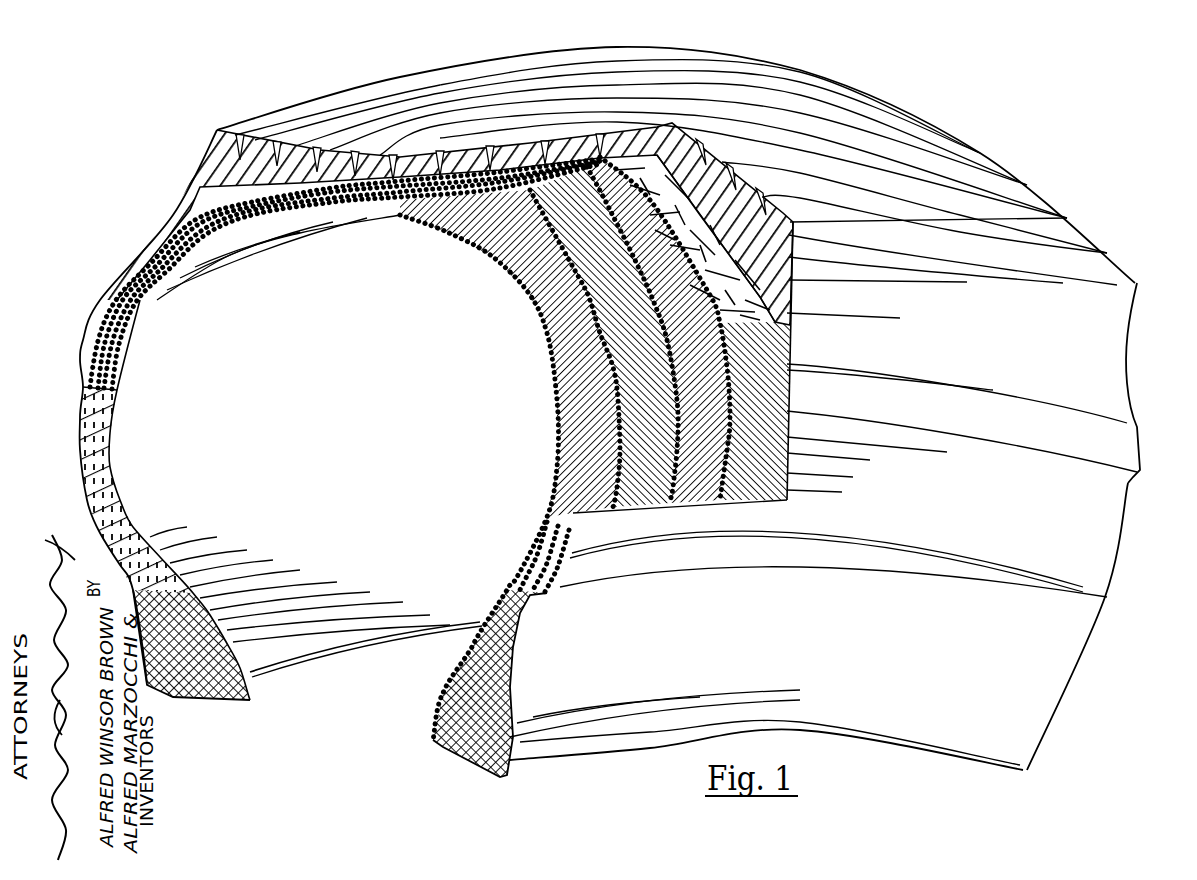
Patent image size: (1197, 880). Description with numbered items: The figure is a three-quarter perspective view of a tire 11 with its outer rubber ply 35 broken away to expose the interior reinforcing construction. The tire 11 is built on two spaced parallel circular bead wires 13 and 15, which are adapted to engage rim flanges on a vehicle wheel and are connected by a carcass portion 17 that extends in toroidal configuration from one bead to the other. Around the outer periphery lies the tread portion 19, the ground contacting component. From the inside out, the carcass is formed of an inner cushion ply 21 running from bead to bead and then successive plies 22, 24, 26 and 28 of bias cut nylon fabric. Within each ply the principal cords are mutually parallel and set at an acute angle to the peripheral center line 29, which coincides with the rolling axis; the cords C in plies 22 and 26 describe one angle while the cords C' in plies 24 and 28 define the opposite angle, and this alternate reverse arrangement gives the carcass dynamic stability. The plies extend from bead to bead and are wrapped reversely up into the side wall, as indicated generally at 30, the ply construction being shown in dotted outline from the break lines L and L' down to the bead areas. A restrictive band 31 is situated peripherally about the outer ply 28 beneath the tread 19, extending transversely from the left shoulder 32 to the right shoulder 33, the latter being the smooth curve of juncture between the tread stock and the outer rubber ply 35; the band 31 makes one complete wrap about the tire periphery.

The tire 11 is at (1129, 383).
The bead wire 13 is at (243, 690).
The bead wire 15 is at (437, 712).
The carcass portion 17 is at (117, 467).
The tread portion 19 is at (280, 127).
The inner cushion ply 21 is at (390, 228).
The carcass ply 22 is at (583, 513).
The carcass ply 24 is at (638, 500).
The carcass ply 26 is at (687, 497).
The carcass ply 28 is at (748, 497).
The peripheral center line 29 is at (773, 113).
The reversely wrapped carcass ply portion 30 is at (545, 590).
The restrictive band 31 is at (792, 313).
The shoulder 32 is at (200, 183).
The shoulder 33 is at (833, 268).
The outer rubber ply 35 is at (106, 312).
The cords C is at (502, 298).
The cords C' is at (638, 320).
The break line L is at (548, 626).
The break line L' is at (67, 386).